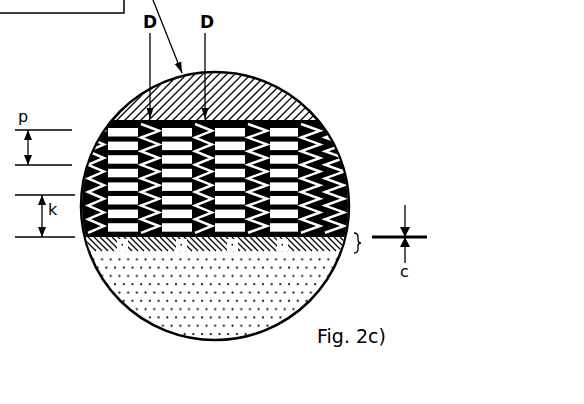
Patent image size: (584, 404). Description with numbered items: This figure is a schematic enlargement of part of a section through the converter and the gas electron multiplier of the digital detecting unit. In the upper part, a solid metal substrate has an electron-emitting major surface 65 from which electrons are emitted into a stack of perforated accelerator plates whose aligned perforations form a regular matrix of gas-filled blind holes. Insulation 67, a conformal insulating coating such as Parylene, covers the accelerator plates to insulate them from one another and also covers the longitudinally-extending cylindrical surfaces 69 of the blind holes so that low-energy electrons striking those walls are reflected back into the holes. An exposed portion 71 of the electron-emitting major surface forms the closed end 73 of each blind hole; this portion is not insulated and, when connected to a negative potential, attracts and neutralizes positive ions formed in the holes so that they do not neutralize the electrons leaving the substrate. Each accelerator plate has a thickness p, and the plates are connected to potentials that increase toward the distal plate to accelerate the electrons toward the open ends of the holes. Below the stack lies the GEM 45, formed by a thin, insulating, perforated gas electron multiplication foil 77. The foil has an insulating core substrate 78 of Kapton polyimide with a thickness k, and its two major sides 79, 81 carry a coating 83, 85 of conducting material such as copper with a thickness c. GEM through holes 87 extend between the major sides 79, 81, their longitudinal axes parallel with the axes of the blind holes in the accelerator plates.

The GEM 45 is at (122, 243).
The electron-emitting major surface 65 is at (232, 117).
The insulation 67 is at (107, 127).
The longitudinally-extending cylindrical surfaces 69 is at (348, 176).
The exposed portion 71 is at (303, 119).
The closed end 73 is at (289, 117).
The gas electron multiplication foil 77 is at (231, 253).
The insulating core substrate 78 is at (299, 257).
The major side 79 is at (347, 208).
The major side 81 is at (338, 261).
The coating 83 is at (158, 239).
The coating 85 is at (202, 253).
The GEM through holes 87 is at (118, 252).